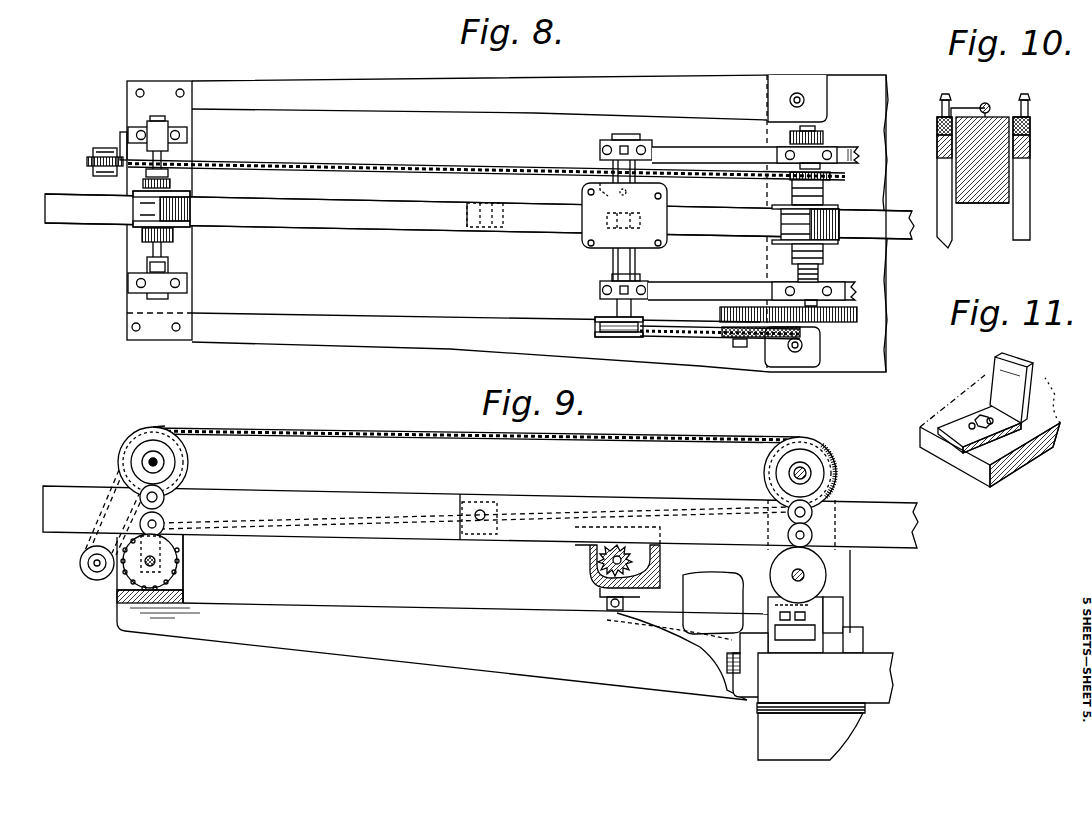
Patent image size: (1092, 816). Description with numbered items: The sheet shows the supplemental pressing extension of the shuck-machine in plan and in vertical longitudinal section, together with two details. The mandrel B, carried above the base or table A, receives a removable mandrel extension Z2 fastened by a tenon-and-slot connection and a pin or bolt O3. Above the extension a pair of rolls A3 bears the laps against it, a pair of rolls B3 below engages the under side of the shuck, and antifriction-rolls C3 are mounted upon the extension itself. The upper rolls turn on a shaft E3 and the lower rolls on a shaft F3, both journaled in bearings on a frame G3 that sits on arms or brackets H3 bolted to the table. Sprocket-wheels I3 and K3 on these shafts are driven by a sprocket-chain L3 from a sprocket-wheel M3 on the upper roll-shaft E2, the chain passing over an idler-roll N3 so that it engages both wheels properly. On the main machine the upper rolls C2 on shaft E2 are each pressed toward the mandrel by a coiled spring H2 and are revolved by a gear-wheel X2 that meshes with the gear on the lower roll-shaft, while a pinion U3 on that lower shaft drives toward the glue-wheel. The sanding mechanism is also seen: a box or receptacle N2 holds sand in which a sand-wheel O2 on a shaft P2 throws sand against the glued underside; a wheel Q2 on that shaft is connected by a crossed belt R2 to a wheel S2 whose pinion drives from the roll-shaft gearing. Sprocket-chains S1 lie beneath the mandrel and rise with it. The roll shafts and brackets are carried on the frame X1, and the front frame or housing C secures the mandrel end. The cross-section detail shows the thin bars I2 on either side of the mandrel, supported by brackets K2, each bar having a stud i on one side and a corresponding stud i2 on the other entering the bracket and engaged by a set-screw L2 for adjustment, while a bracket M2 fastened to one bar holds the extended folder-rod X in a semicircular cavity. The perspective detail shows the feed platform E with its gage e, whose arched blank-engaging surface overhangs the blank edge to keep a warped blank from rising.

In FIG. 8, the arms or brackets H3 is at (425, 105).
In FIG. 9, the arms or brackets H3 is at (304, 612).
In FIG. 8, the mandrel B is at (479, 216).
In FIG. 10, the mandrel B is at (987, 205).
In FIG. 8, the mandrel extension Z2 is at (372, 221).
In FIG. 9, the mandrel extension Z2 is at (343, 496).
In FIG. 8, the pin or bolt O3 is at (484, 229).
In FIG. 9, the pin or bolt O3 is at (481, 510).
In FIG. 8, the sprocket-chain L3 is at (507, 167).
In FIG. 9, the sprocket-chain L3 is at (426, 430).
In FIG. 8, the sprocket-wheel I3 is at (168, 162).
In FIG. 9, the sprocket-wheel I3 is at (160, 432).
In FIG. 8, the rolls A3 is at (190, 207).
In FIG. 9, the rolls A3 is at (188, 459).
In FIG. 8, the frame G3 is at (130, 254).
In FIG. 8, the idler-roll N3 is at (88, 160).
In FIG. 9, the idler-roll N3 is at (85, 569).
In FIG. 8, the box or receptacle N2 is at (610, 203).
In FIG. 9, the box or receptacle N2 is at (578, 586).
In FIG. 8, the sand-wheel O2 is at (605, 221).
In FIG. 9, the sand-wheel O2 is at (634, 566).
In FIG. 8, the shaft P2 is at (612, 299).
In FIG. 9, the shaft P2 is at (590, 598).
In FIG. 8, the wheel Q2 is at (629, 338).
In FIG. 8, the crossed belt R2 is at (668, 340).
In FIG. 8, the frame X1 is at (703, 290).
In FIG. 8, the coiled spring H2 is at (830, 191).
In FIG. 8, the pinion U3 is at (825, 138).
In FIG. 8, the shaft E2 is at (815, 261).
In FIG. 9, the shaft E2 is at (790, 473).
In FIG. 8, the base or table A is at (843, 276).
In FIG. 8, the frame or housing C is at (785, 207).
In FIG. 8, the rolls C2 is at (784, 229).
In FIG. 8, the sprocket-chains S1 is at (719, 312).
In FIG. 8, the wheel S2 is at (758, 338).
In FIG. 8, the gear-wheel X2 is at (838, 322).
In FIG. 9, the shaft E3 is at (148, 460).
In FIG. 9, the antifriction-rolls C3 is at (165, 522).
In FIG. 9, the rolls B3 is at (175, 563).
In FIG. 9, the sprocket-wheel K3 is at (185, 548).
In FIG. 9, the shaft F3 is at (140, 566).
In FIG. 9, the sprocket-wheel M3 is at (838, 458).
In FIG. 10, the folder-rods X is at (985, 118).
In FIG. 10, the brackets K2 is at (1015, 234).
In FIG. 10, the stud i is at (937, 135).
In FIG. 10, the nut i2 is at (1030, 135).
In FIG. 10, the thin bars I2 is at (946, 143).
In FIG. 10, the bracket M2 is at (950, 103).
In FIG. 10, the set-screw L2 is at (1022, 101).
In FIG. 11, the table or platform E is at (977, 472).
In FIG. 11, the gage e is at (1006, 382).